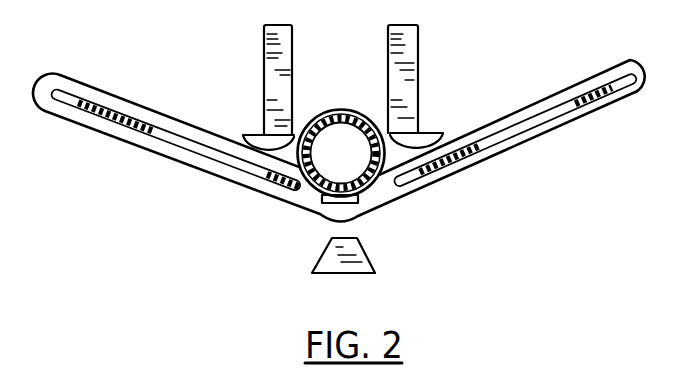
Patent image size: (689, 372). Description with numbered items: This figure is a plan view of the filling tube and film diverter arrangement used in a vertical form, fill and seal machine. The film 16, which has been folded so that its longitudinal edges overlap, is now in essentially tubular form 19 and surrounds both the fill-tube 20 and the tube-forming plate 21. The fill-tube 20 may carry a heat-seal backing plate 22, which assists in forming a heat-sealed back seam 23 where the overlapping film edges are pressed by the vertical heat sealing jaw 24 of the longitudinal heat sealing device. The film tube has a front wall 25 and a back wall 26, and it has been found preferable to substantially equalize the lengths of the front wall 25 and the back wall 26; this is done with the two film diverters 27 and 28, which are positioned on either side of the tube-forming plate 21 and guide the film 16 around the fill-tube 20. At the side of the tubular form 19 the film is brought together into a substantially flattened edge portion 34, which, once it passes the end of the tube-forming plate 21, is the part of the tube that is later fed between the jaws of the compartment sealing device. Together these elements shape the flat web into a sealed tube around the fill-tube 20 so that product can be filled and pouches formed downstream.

The film 16 is at (150, 150).
The tubular form 19 is at (342, 109).
The fill-tube 20 is at (410, 193).
The tube-forming plate 21 is at (512, 148).
The heat-seal backing plate 22 is at (357, 213).
The heat-sealed back seam 23 is at (332, 222).
The vertical heat sealing jaw 24 is at (358, 273).
The front wall 25 is at (235, 183).
The back wall 26 is at (147, 108).
The film diverter 27 is at (257, 135).
The film diverter 28 is at (435, 133).
The substantially flattened edge portion 34 is at (634, 97).